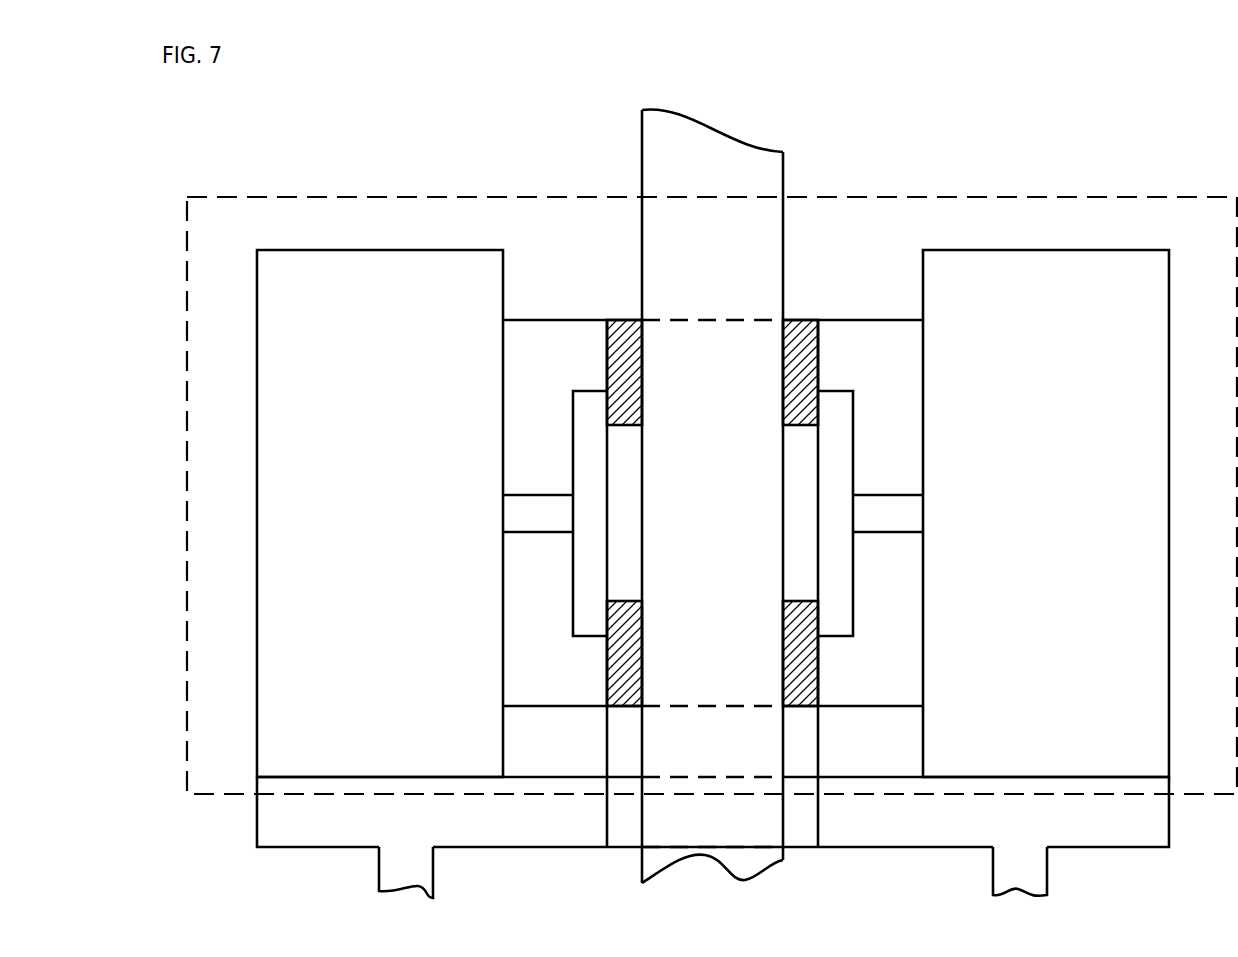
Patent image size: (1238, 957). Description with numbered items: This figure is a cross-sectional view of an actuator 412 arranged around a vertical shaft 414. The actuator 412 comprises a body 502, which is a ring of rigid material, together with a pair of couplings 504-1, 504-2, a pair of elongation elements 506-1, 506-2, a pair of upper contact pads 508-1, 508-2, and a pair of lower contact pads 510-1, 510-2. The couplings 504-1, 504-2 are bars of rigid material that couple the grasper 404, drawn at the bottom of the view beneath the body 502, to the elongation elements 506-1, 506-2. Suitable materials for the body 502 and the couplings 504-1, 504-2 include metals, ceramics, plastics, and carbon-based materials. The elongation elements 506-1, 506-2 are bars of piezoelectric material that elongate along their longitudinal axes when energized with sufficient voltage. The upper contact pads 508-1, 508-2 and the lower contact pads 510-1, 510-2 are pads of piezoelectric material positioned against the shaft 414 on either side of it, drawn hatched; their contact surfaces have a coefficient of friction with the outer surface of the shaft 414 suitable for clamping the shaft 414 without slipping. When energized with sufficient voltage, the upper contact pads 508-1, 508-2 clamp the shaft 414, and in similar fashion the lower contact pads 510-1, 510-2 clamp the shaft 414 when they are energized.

The actuator 412 is at (303, 231).
The shaft 414 is at (774, 167).
The body 502 is at (473, 267).
The coupling 504-1 is at (520, 513).
The coupling 504-2 is at (903, 513).
The elongation element 506-1 is at (582, 443).
The elongation element 506-2 is at (843, 443).
The upper contact pad 508-1 is at (605, 373).
The upper contact pad 508-2 is at (810, 373).
The lower contact pad 510-1 is at (617, 681).
The lower contact pad 510-2 is at (810, 680).
The grasper 404 is at (1152, 829).